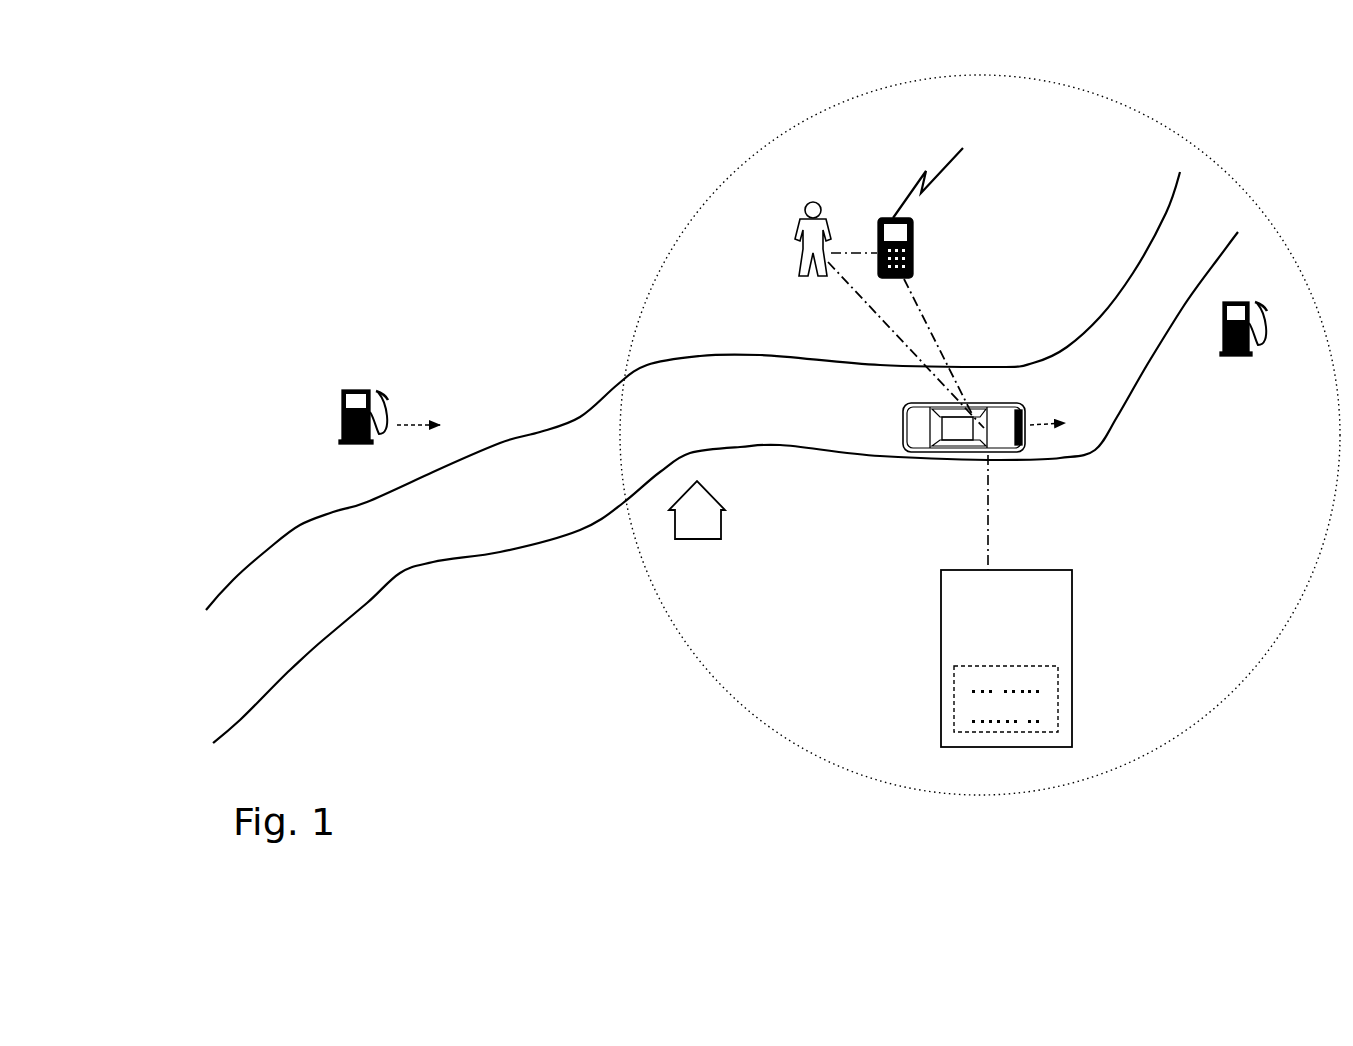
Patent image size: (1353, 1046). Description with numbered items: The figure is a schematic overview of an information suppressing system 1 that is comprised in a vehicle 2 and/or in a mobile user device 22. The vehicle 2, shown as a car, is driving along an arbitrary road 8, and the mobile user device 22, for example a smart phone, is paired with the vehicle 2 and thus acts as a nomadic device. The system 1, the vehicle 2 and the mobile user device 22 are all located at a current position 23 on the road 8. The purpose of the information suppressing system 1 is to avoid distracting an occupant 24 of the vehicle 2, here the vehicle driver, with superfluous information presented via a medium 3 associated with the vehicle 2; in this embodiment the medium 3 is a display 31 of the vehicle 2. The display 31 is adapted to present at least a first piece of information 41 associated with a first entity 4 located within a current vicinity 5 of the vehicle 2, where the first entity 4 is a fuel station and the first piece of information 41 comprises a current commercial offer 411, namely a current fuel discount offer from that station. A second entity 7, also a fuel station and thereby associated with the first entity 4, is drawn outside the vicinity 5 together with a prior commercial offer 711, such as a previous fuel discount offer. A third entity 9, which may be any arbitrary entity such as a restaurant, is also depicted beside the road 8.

The information suppressing system 1 is at (512, 267).
The vehicle 2 is at (965, 469).
The current position 23 is at (954, 461).
The mobile user device 22 is at (917, 233).
The occupant 24 is at (788, 239).
The medium 3 is at (934, 658).
The display 31 is at (939, 631).
The first entity 4 is at (1243, 377).
The first piece of information 41 is at (1074, 699).
The current commercial offer 411 is at (1034, 705).
The current vicinity 5 is at (748, 715).
The second entity 7 is at (327, 439).
The prior commercial offer 711 is at (418, 409).
The road 8 is at (371, 614).
The third entity 9 is at (667, 521).